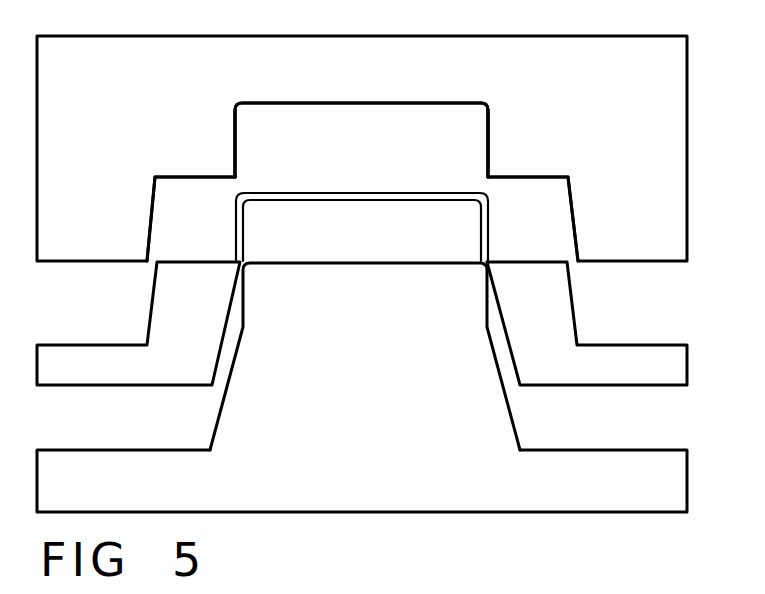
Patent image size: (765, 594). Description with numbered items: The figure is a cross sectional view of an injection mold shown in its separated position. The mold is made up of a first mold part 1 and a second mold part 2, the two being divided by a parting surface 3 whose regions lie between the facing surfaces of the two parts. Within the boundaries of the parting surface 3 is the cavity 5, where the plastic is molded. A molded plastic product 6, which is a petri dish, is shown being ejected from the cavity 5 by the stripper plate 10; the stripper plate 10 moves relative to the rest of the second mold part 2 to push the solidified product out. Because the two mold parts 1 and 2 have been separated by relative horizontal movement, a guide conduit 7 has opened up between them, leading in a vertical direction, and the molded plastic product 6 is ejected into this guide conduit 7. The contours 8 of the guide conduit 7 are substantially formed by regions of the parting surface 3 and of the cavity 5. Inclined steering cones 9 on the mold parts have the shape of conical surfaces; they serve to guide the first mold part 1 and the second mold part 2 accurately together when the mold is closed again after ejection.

The first mold part 1 is at (362, 148).
The second mold part 2 is at (641, 372).
The parting surface 3 is at (196, 177).
The cavity 5 is at (373, 102).
The molded plastic product 6 is at (428, 193).
The guide conduit 7 is at (362, 230).
The contours of the guide conduit 8 is at (235, 143).
The steering cones 9 is at (540, 220).
The stripper plate 10 is at (379, 356).